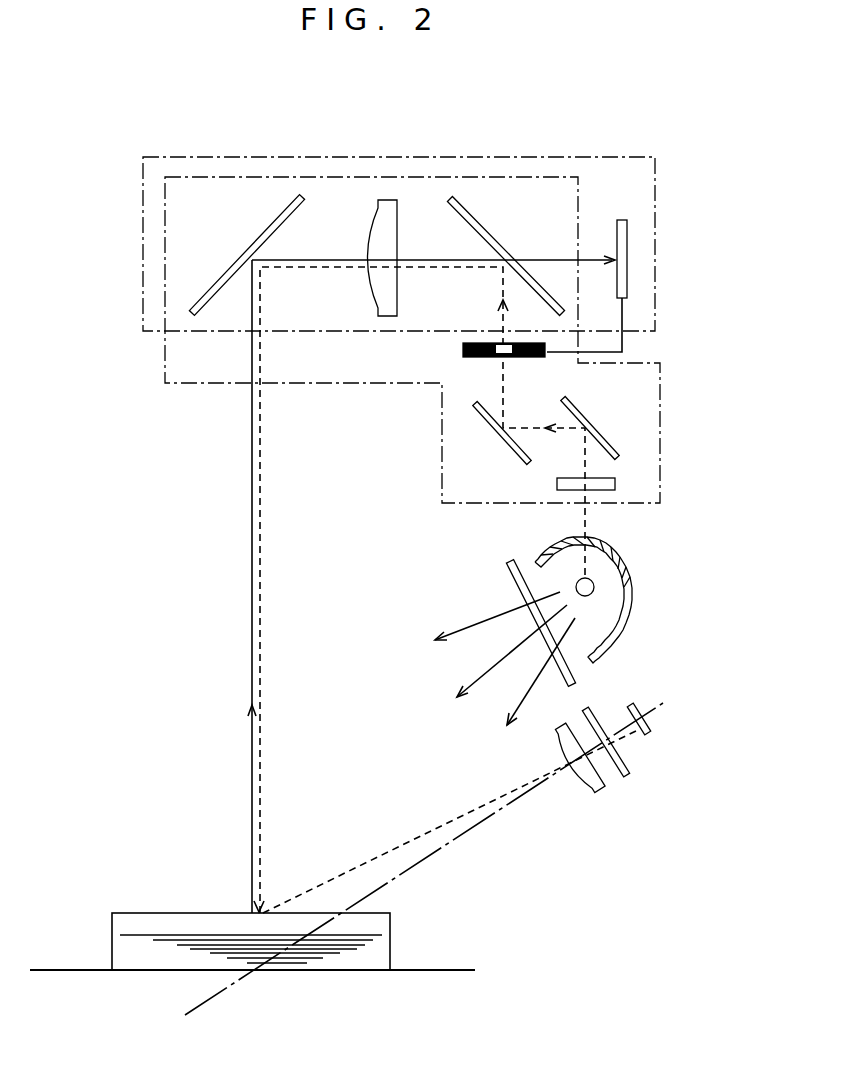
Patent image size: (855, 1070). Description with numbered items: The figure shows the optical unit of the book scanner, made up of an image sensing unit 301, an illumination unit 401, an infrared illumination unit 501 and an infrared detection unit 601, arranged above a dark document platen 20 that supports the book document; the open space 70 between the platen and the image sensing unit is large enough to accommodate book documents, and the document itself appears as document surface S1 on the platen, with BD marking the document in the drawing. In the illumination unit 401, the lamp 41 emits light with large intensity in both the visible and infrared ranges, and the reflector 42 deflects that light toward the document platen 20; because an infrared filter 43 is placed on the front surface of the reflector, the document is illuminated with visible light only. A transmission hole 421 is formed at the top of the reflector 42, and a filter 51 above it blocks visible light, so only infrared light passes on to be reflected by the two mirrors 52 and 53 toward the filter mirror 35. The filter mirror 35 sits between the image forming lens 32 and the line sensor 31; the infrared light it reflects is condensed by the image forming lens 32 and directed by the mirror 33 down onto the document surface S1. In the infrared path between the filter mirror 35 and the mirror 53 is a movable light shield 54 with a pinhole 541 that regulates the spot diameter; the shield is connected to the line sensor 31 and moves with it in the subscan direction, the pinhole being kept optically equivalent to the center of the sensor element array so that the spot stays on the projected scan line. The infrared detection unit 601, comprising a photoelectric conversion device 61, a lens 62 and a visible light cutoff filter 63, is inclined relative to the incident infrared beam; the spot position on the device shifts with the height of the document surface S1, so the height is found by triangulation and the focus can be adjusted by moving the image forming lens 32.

The image sensing unit 301 is at (563, 158).
The infrared illumination unit 501 is at (302, 384).
The mirror 33 is at (277, 205).
The image forming lens 32 is at (387, 200).
The filter mirror 35 is at (480, 218).
The line sensor 31 is at (628, 228).
The movable light shield 54 is at (542, 357).
The pinhole 541 is at (497, 358).
The mirror 53 is at (505, 441).
The mirror 52 is at (605, 440).
The filter 51 is at (615, 483).
The reflector 42 is at (633, 570).
The transmission hole 421 is at (573, 532).
The lamp 41 is at (595, 588).
The infrared filter 43 is at (513, 588).
The illumination unit 401 is at (630, 643).
The open space 70 is at (188, 605).
The photoelectric conversion device 61 is at (648, 732).
The visible light cutoff filter 63 is at (630, 780).
The lens 62 is at (602, 792).
The infrared detection unit 601 is at (644, 842).
The document platen 20 is at (422, 970).
The document surface S1 is at (167, 913).
The bonding region BD is at (112, 948).